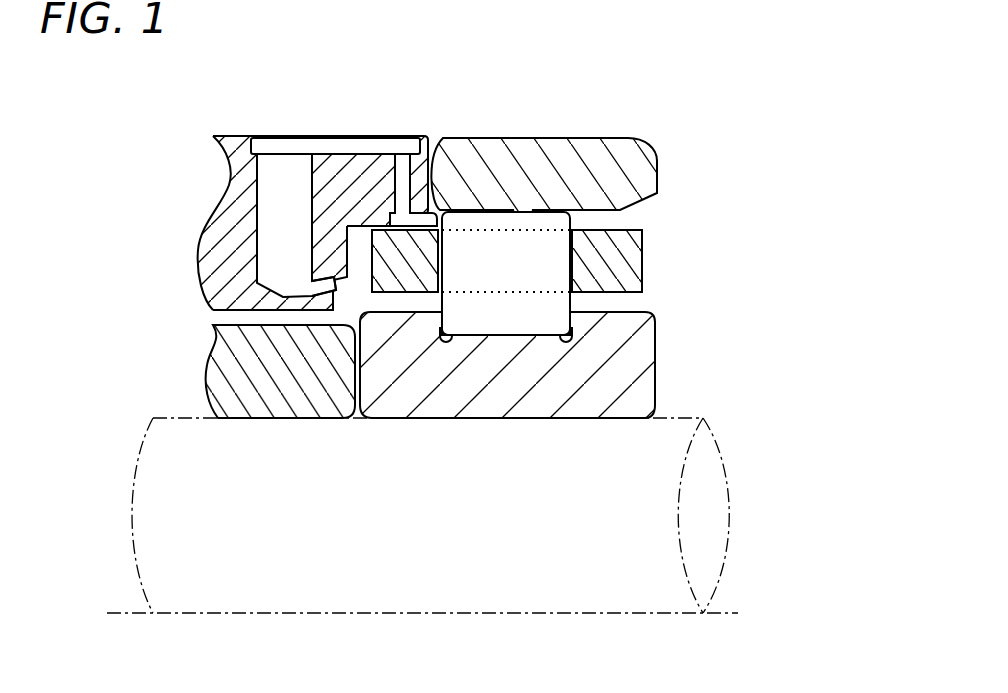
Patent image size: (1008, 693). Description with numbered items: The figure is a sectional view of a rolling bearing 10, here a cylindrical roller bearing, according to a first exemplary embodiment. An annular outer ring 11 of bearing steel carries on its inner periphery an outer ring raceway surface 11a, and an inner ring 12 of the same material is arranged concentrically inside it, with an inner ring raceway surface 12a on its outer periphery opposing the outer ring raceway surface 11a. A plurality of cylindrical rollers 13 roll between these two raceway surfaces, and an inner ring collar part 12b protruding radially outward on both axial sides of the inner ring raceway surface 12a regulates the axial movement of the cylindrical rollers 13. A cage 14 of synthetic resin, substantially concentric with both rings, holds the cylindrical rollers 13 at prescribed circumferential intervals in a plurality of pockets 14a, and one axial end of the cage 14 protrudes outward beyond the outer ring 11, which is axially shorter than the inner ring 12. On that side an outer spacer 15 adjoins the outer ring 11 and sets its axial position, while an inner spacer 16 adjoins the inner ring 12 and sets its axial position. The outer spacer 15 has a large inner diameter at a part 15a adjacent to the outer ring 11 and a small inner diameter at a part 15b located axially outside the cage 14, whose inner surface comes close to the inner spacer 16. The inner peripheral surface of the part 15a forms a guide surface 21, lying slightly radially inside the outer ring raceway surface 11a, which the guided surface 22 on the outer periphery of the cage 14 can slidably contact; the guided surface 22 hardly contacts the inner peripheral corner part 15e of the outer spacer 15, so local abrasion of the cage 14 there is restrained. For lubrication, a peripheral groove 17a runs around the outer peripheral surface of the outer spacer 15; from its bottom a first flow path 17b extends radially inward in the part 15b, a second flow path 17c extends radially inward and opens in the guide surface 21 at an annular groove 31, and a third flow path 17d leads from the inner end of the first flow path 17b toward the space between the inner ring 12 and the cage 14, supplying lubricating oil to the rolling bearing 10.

The rolling bearing 10 is at (643, 90).
The outer ring 11 is at (572, 150).
The outer ring raceway surface 11a is at (533, 210).
The inner ring 12 is at (605, 400).
The inner ring raceway surface 12a is at (480, 335).
The inner ring collar part 12b is at (600, 308).
The cylindrical roller 13 is at (533, 310).
The cage 14 is at (633, 265).
The pocket 14a is at (615, 249).
The outer spacer 15 is at (228, 150).
The large inner diameter part of outer spacer 15a is at (343, 165).
The small inner diameter part of outer spacer 15b is at (255, 212).
The inner peripheral corner part 15e is at (441, 218).
The inner spacer 16 is at (253, 405).
The peripheral groove 17a is at (318, 152).
The first flow path 17b is at (268, 160).
The second flow path 17c is at (402, 165).
The third flow path 17d is at (348, 226).
The guide surface 21 is at (332, 160).
The guided surface 22 is at (373, 230).
The annular groove 31 is at (401, 226).